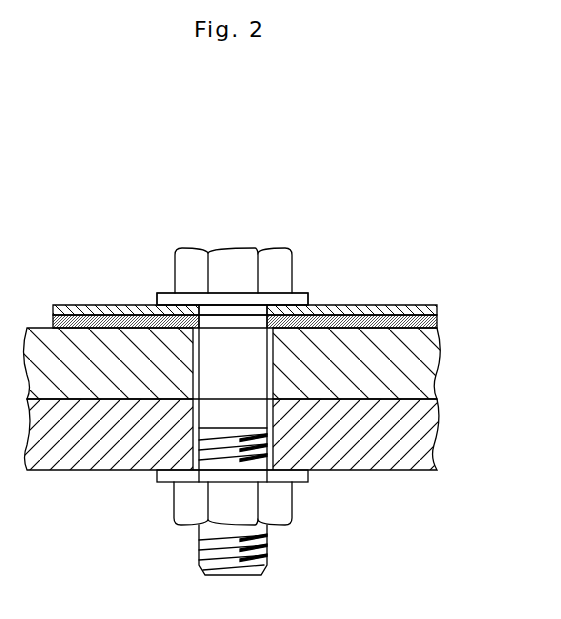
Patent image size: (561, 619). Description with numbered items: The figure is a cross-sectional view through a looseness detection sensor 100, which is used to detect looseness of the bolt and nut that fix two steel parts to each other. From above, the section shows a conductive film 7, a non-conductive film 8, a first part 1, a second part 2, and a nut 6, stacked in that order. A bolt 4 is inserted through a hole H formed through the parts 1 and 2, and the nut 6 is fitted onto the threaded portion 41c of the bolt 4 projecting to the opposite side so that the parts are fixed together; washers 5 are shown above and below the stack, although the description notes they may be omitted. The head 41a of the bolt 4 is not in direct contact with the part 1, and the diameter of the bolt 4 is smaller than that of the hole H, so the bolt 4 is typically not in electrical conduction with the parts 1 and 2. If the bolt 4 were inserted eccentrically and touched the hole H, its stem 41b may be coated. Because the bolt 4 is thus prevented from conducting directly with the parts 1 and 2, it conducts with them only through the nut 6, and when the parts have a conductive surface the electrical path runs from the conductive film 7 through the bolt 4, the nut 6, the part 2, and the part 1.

The looseness detection sensor 100 is at (106, 291).
The part (steel material) 1 is at (438, 360).
The part (steel material) 2 is at (438, 437).
The bolt 4 is at (237, 258).
The head of the bolt 41a is at (292, 284).
The stem of the bolt 41b is at (195, 366).
The threaded portion of the bolt 41c is at (268, 547).
The washer 5 is at (162, 296).
The nut 6 is at (288, 497).
The conductive film 7 is at (437, 305).
The non-conductive film 8 is at (437, 321).
The hole H is at (312, 303).